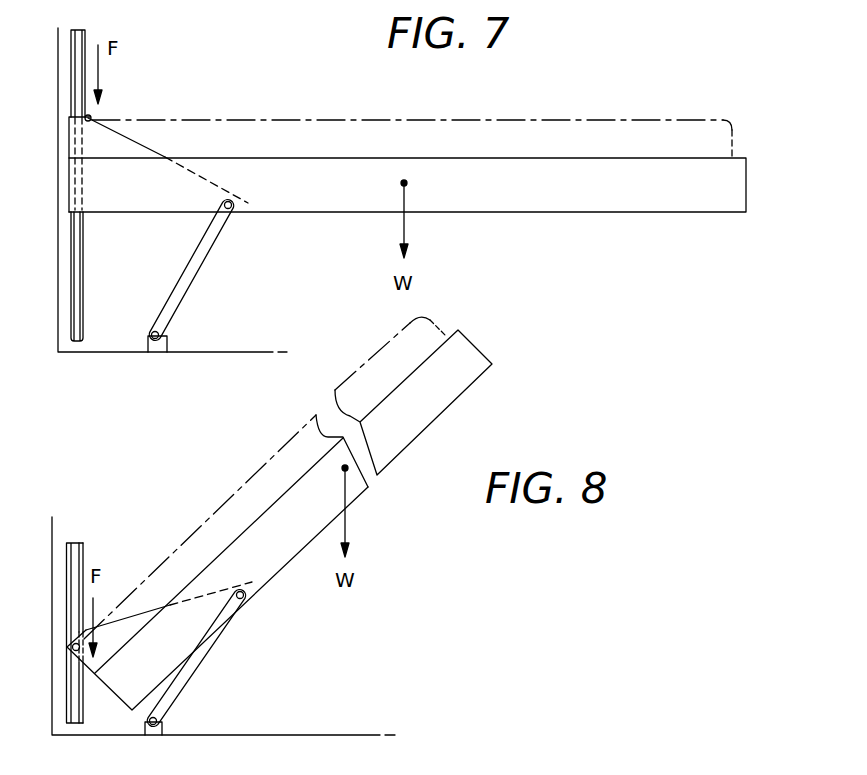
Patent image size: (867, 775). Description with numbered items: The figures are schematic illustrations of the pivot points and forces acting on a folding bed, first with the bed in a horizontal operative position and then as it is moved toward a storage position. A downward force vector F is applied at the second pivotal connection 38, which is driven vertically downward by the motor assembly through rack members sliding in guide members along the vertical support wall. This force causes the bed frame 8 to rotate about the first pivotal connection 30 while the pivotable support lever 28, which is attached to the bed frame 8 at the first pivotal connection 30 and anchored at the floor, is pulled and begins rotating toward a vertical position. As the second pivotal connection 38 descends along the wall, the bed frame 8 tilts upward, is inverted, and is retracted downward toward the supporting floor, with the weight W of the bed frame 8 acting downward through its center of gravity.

In FIG. 7, the bed frame 8 is at (687, 198).
In FIG. 8, the bed frame 8 is at (453, 380).
In FIG. 7, the support lever 28 is at (195, 277).
In FIG. 8, the support lever 28 is at (188, 685).
In FIG. 7, the first pivotal connection 30 is at (236, 210).
In FIG. 8, the first pivotal connection 30 is at (245, 600).
In FIG. 7, the second pivotal connection 38 is at (90, 117).
In FIG. 8, the second pivotal connection 38 is at (67, 645).